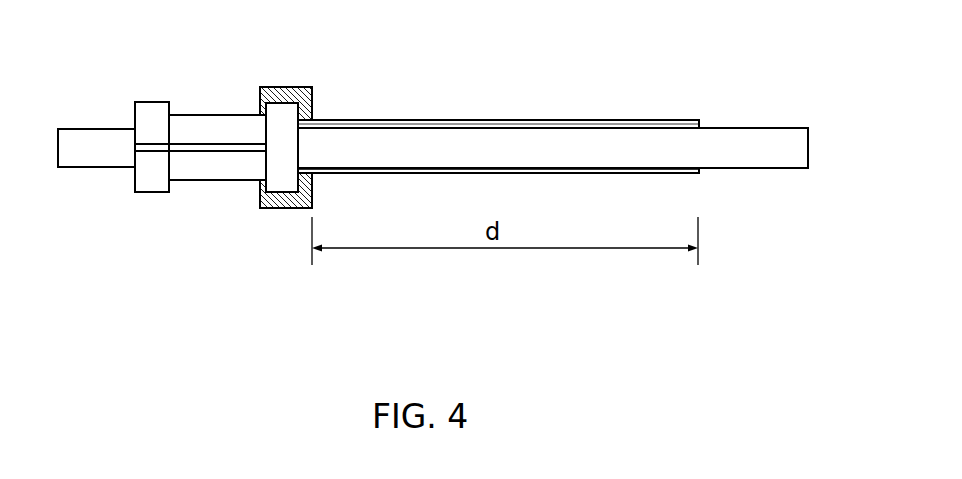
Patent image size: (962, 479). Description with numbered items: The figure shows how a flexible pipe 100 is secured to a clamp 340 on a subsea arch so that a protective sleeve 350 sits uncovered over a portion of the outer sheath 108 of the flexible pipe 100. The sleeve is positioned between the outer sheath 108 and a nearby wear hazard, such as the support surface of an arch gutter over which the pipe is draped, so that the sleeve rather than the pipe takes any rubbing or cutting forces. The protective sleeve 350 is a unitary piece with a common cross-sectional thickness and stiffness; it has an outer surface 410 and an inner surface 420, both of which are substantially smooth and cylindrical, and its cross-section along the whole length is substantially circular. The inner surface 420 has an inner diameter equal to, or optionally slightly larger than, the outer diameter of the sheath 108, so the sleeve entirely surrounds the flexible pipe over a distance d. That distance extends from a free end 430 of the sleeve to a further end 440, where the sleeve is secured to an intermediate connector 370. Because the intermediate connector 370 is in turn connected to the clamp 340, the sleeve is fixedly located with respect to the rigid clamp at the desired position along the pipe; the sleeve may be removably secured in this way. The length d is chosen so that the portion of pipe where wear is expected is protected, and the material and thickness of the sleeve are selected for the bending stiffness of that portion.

The flexible pipe 100 is at (77, 183).
The outer sheath 108 is at (750, 153).
The clamp 340 is at (150, 212).
The protective sleeve 350 is at (625, 120).
The intermediate connector 370 is at (293, 210).
The outer surface 410 is at (400, 120).
The inner surface 420 is at (493, 125).
The free end 430 is at (698, 121).
The further end 440 is at (334, 109).